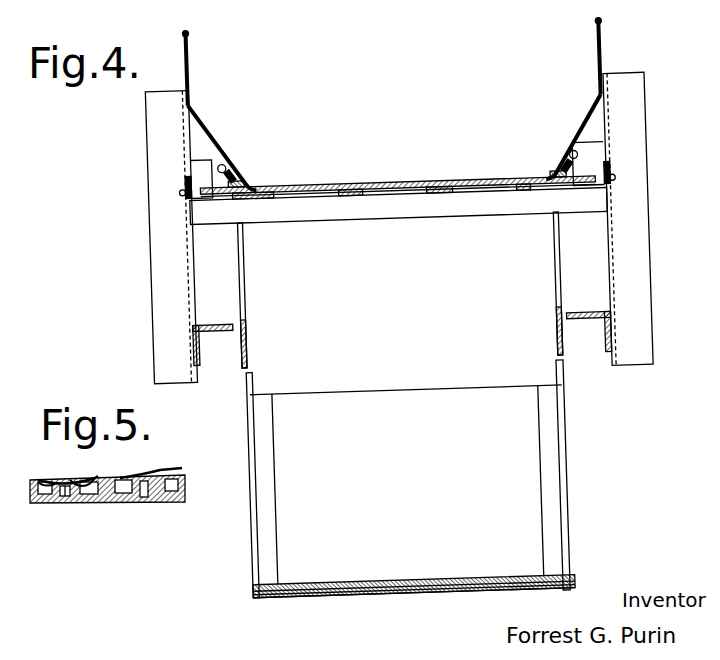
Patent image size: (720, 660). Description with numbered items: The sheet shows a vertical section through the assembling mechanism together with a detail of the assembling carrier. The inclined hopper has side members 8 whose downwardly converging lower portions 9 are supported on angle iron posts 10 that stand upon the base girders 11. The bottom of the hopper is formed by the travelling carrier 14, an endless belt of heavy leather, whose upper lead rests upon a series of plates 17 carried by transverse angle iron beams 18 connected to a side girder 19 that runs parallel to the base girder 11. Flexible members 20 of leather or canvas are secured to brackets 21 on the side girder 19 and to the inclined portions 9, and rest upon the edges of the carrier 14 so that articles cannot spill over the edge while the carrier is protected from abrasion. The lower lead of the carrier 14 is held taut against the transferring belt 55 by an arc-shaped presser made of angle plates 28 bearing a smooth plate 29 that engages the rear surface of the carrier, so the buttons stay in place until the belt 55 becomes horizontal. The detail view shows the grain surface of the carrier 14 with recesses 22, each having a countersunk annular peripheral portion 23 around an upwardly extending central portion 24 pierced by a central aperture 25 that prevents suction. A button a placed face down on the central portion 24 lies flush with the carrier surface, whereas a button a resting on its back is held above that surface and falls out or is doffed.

In FIG. 4, the side member 8 is at (199, 56).
In FIG. 4, the downwardly converging lower portion 9 is at (223, 134).
In FIG. 4, the post 10 is at (151, 254).
In FIG. 4, the girder 11 is at (192, 328).
In FIG. 4, the travelling carrier 14 is at (416, 185).
In FIG. 4, the plate 17 is at (361, 192).
In FIG. 4, the transverse angle iron beam 18 is at (498, 208).
In FIG. 4, the side girder 19 is at (198, 194).
In FIG. 4, the flexible member 20 is at (244, 170).
In FIG. 4, the bracket 21 is at (200, 142).
In FIG. 5, the recess 22 is at (172, 490).
In FIG. 5, the countersunk annular peripheral portion 23 is at (95, 490).
In FIG. 5, the upwardly extending central portion 24 is at (60, 500).
In FIG. 5, the central aperture 25 is at (68, 494).
In FIG. 4, the angle plate 28 is at (250, 543).
In FIG. 4, the smooth plate 29 is at (474, 582).
In FIG. 4, the transferring belt 55 is at (339, 598).
In FIG. 5, the button a is at (75, 478).